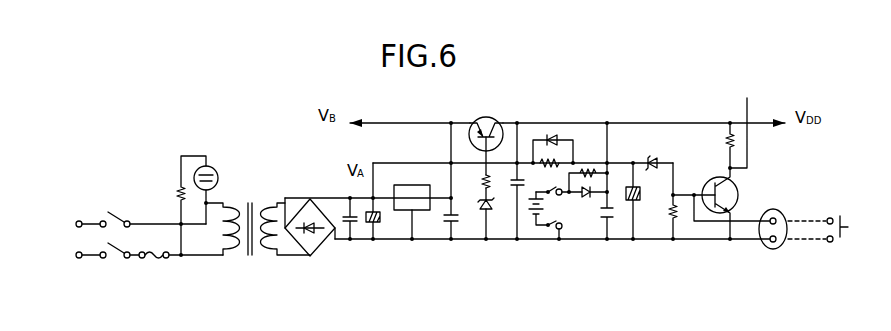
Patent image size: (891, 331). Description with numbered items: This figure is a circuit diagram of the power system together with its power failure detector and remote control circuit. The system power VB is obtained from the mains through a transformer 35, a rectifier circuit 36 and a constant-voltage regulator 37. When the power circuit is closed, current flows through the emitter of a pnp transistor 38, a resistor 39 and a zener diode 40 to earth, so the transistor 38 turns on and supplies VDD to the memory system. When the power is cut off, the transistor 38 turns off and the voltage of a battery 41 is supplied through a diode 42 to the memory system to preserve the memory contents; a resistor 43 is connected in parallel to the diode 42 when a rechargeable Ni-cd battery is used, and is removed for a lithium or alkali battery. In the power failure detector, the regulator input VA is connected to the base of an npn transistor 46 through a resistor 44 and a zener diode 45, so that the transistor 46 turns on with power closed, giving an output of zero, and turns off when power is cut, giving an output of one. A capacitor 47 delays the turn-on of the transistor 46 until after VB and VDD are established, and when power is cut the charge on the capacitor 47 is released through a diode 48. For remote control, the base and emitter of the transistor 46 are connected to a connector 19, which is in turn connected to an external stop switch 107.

The connector 19 is at (780, 211).
The transformer 35 is at (258, 211).
The rectifier circuit 36 is at (310, 216).
The constant-voltage regulator 37 is at (412, 200).
The pnp transistor 38 is at (478, 119).
The resistor 39 is at (474, 175).
The zener diode 40 is at (478, 218).
The battery 41 is at (541, 230).
The diode 42 is at (557, 208).
The resistor 43 is at (565, 151).
The resistor 44 is at (570, 181).
The zener diode 45 is at (651, 157).
The npn transistor 46 is at (732, 203).
The capacitor 47 is at (641, 201).
The diode 48 is at (528, 170).
The external stop switch 107 is at (820, 217).